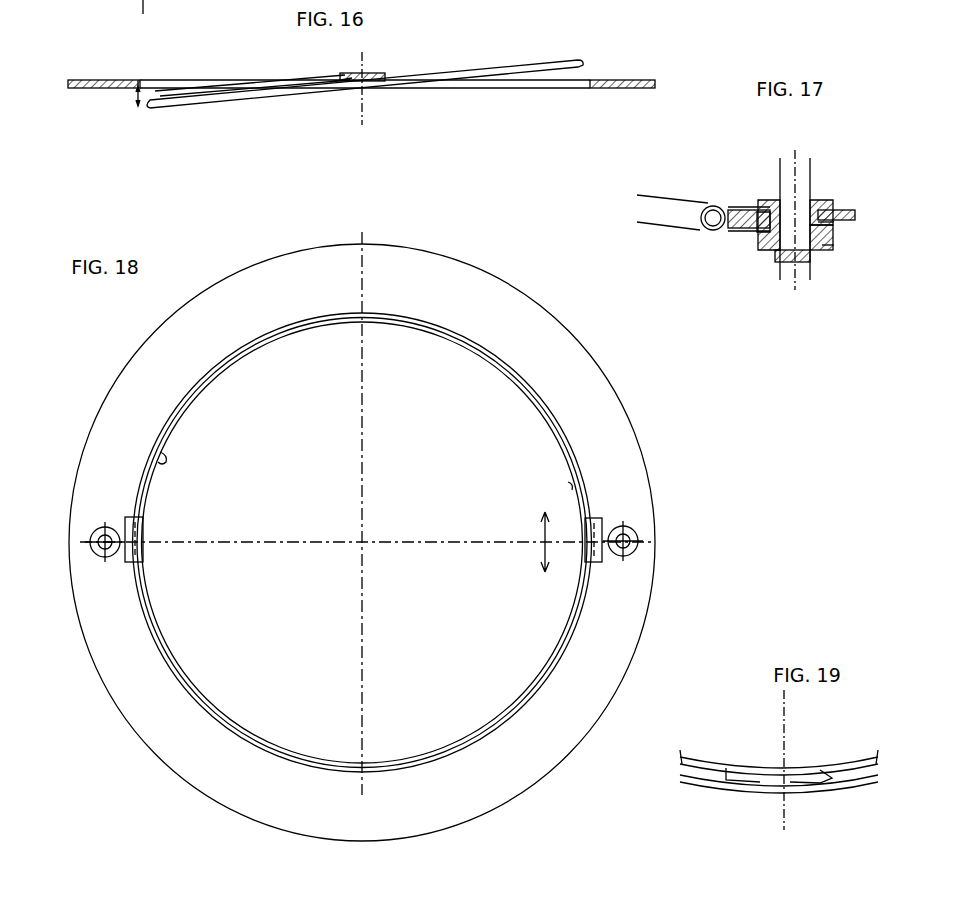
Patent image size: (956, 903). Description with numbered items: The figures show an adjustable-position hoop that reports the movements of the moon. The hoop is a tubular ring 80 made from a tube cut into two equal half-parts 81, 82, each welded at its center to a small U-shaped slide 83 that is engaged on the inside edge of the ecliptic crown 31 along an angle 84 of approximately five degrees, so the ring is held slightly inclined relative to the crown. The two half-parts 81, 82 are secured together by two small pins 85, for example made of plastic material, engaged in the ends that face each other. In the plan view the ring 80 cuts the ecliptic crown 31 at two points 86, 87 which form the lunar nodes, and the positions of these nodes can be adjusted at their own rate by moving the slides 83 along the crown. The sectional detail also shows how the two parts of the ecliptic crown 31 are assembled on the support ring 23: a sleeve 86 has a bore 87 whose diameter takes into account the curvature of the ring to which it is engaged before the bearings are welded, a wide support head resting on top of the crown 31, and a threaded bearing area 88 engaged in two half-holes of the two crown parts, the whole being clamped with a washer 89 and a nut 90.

In FIG. 17, the support ring 23 is at (782, 182).
In FIG. 16, the ecliptic crown 31 is at (107, 90).
In FIG. 17, the ecliptic crown 31 is at (848, 208).
In FIG. 18, the ecliptic crown 31 is at (138, 372).
In FIG. 16, the ring 80 is at (541, 65).
In FIG. 17, the ring 80 is at (684, 200).
In FIG. 18, the ring 80 is at (561, 452).
In FIG. 16, the first half-part of the tube 81 is at (252, 85).
In FIG. 18, the first half-part of the tube 81 is at (572, 488).
In FIG. 19, the first half-part of the tube 81 is at (706, 780).
In FIG. 18, the second half-part of the tube 82 is at (160, 452).
In FIG. 19, the second half-part of the tube 82 is at (846, 778).
In FIG. 16, the U-shaped slide 83 is at (378, 90).
In FIG. 17, the U-shaped slide 83 is at (750, 235).
In FIG. 18, the U-shaped slide 83 is at (592, 520).
In FIG. 16, the angle 84 is at (143, 100).
In FIG. 19, the pin 85 is at (752, 782).
In FIG. 16, the sleeve 86 is at (345, 90).
In FIG. 17, the sleeve 86 is at (812, 190).
In FIG. 18, the sleeve 86 is at (158, 548).
In FIG. 17, the bore 87 is at (790, 250).
In FIG. 18, the bore 87 is at (575, 550).
In FIG. 17, the threaded bearing area 88 is at (818, 252).
In FIG. 17, the washer 89 is at (835, 226).
In FIG. 17, the nut 90 is at (828, 240).